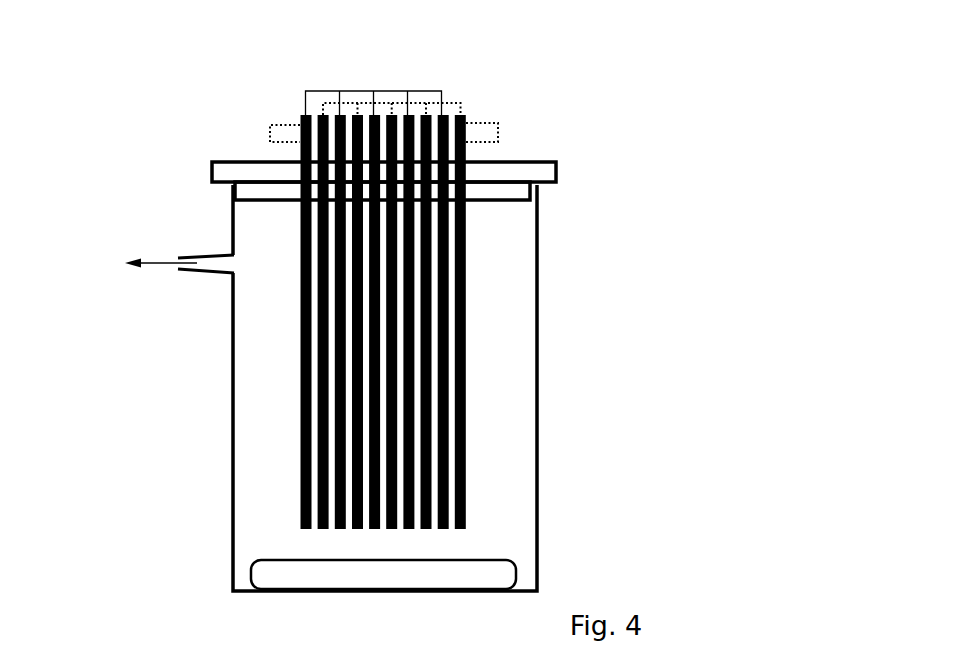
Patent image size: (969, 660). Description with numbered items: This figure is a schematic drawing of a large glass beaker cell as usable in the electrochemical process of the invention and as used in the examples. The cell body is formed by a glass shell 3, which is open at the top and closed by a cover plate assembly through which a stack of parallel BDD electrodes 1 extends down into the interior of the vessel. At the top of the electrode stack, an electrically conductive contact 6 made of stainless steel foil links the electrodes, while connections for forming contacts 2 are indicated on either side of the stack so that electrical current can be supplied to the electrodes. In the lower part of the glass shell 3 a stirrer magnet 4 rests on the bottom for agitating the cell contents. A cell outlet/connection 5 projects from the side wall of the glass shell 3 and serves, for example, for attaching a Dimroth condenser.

The BDD electrodes 1 is at (466, 151).
The connections for forming contacts 2 is at (268, 134).
The glass shell 3 is at (538, 299).
The stirrer magnet 4 is at (516, 576).
The cell outlet/connection 5 is at (110, 263).
The electrically conductive contact 6 is at (450, 102).